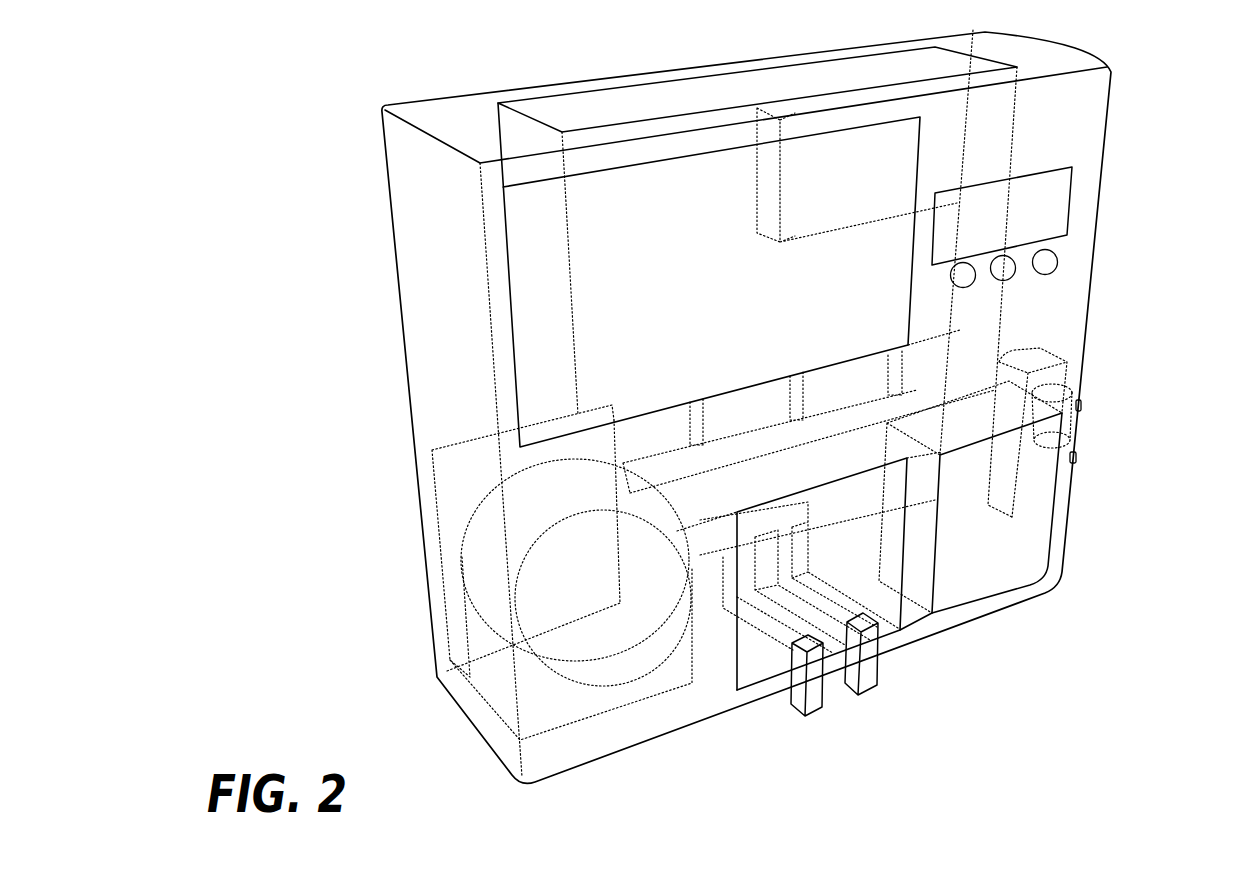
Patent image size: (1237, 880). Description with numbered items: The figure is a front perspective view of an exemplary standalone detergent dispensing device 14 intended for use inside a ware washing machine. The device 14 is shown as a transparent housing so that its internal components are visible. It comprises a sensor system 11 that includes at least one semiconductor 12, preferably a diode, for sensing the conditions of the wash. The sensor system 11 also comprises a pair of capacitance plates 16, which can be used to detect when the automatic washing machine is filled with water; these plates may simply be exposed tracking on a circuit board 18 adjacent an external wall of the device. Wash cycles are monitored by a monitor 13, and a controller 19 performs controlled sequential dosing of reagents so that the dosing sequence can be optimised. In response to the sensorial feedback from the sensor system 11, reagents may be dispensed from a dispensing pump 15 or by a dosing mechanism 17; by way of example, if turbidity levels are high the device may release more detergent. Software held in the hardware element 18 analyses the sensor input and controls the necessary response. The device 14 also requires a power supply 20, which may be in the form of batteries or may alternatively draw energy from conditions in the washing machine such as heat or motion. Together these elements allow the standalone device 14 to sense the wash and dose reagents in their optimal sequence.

The sensor system 11 is at (1048, 370).
The semiconductor 12 is at (1047, 432).
The monitor 13 is at (1020, 212).
The standalone detergent dispensing device 14 is at (1166, 112).
The dispensing pump 15 is at (485, 558).
The capacitance plates 16 is at (1075, 459).
The dosing mechanism 17 is at (817, 703).
The hardware element 18 is at (992, 567).
The controller 19 is at (1047, 263).
The power supply 20 is at (943, 127).